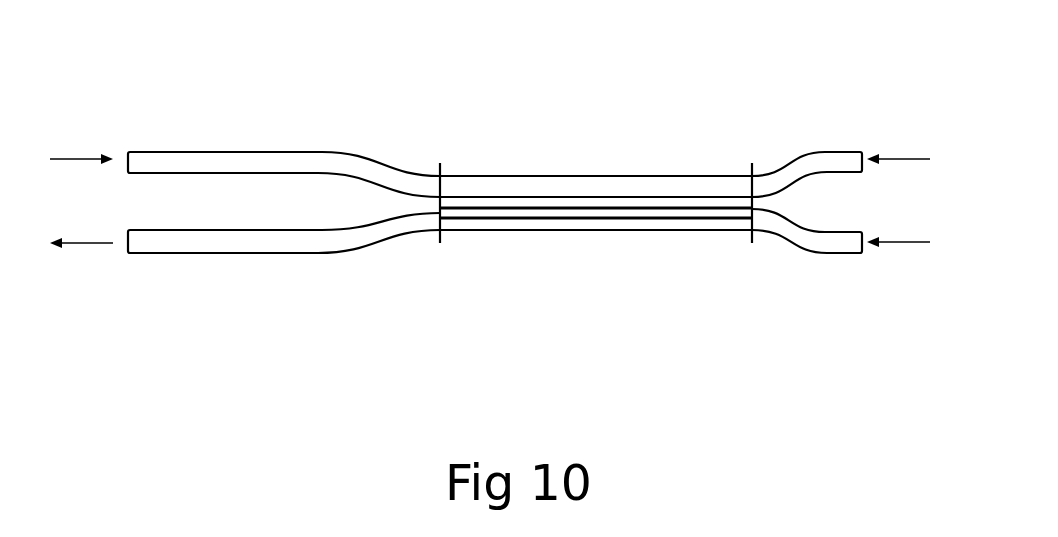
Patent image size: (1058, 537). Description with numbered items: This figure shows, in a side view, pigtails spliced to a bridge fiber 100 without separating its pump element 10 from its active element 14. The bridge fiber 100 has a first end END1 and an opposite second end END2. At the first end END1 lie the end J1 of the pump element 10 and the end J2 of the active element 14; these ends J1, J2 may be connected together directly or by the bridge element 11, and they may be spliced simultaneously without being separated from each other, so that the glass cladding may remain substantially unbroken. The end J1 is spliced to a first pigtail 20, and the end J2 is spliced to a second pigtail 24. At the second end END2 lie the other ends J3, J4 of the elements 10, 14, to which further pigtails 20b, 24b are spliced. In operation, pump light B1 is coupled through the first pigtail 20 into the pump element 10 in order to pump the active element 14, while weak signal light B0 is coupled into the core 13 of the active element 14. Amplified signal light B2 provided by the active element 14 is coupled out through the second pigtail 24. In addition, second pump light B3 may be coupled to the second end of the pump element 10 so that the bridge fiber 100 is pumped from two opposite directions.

The bridge fiber 100 is at (490, 183).
The first pigtail 20 is at (218, 152).
The second pigtail 24 is at (228, 253).
The further pigtail 20b is at (840, 152).
The further pigtail 24b is at (862, 254).
The pump element 10 is at (673, 176).
The bridge element 11 is at (670, 203).
The core 13 is at (613, 222).
The active element 14 is at (563, 231).
The end of the pump element J1 is at (440, 176).
The end of the active element J2 is at (440, 230).
The other end of the pump element J3 is at (752, 176).
The other end of the active element J4 is at (752, 230).
The weak signal light B0 is at (898, 258).
The pump light B1 is at (81, 143).
The amplified signal light B2 is at (81, 225).
The second pump light B3 is at (898, 141).
The first end END1 is at (305, 202).
The second end END2 is at (865, 192).